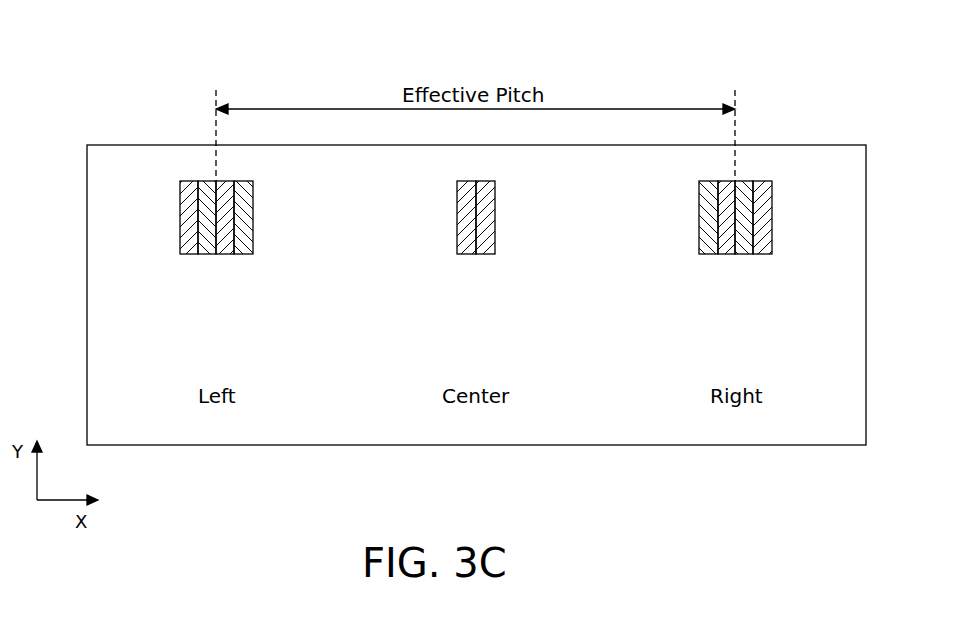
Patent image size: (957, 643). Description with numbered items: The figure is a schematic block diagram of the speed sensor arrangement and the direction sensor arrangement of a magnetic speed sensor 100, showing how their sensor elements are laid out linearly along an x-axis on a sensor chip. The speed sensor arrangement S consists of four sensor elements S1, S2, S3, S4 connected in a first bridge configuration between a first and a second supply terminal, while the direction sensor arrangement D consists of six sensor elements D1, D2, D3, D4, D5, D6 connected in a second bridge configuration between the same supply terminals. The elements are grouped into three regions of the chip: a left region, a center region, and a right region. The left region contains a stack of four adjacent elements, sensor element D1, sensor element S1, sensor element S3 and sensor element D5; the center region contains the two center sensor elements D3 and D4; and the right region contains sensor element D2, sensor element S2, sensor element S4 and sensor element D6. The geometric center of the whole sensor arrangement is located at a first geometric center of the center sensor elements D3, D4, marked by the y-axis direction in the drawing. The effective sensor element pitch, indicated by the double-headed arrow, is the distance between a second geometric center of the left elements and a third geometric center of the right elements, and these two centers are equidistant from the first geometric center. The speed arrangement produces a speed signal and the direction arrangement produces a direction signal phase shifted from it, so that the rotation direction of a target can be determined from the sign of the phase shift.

The magnetic speed sensor 100 is at (788, 145).
The sensor element D1 is at (180, 222).
The sensor element D2 is at (699, 220).
The sensor element D3 is at (457, 218).
The sensor element D4 is at (495, 218).
The sensor element D5 is at (253, 222).
The sensor element D6 is at (772, 220).
The sensor element S1 is at (207, 256).
The sensor element S2 is at (725, 256).
The sensor element S3 is at (228, 256).
The sensor element S4 is at (745, 256).